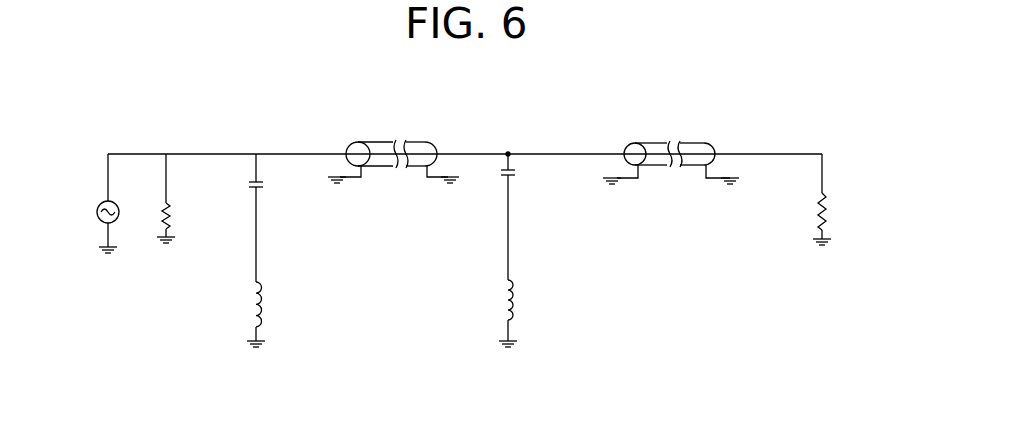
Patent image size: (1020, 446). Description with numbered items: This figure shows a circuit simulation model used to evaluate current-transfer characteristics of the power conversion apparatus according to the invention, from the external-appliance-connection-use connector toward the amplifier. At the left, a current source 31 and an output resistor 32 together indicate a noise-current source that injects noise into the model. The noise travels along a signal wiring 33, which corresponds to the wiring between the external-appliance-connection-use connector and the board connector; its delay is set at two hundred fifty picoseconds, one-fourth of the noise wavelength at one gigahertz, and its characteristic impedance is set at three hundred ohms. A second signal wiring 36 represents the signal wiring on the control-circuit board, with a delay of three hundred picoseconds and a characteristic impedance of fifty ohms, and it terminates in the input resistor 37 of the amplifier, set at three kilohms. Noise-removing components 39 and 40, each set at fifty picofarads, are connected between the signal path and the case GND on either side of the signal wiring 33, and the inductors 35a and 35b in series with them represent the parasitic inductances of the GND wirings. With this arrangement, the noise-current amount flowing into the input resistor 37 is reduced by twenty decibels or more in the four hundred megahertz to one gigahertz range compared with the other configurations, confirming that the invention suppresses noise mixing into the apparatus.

The current source 31 is at (99, 221).
The output resistor 32 is at (169, 225).
The signal wiring 33 is at (388, 141).
The inductor 35a is at (259, 312).
The inductor 35b is at (505, 318).
The signal wiring 36 is at (668, 132).
The input resistor 37 is at (826, 198).
The noise-removing component 39 is at (258, 192).
The noise-removing component 40 is at (513, 184).